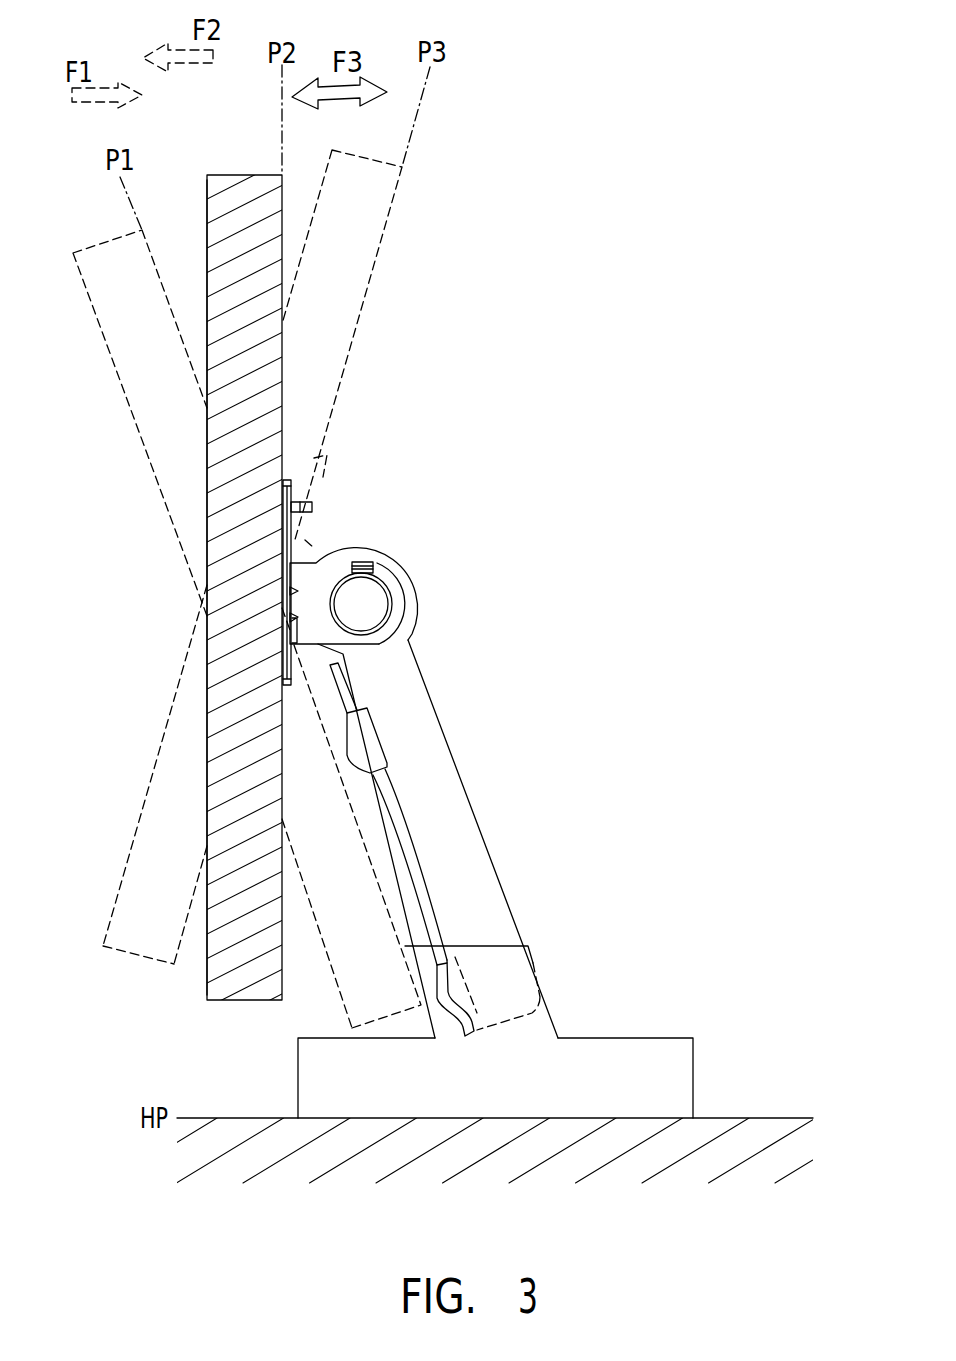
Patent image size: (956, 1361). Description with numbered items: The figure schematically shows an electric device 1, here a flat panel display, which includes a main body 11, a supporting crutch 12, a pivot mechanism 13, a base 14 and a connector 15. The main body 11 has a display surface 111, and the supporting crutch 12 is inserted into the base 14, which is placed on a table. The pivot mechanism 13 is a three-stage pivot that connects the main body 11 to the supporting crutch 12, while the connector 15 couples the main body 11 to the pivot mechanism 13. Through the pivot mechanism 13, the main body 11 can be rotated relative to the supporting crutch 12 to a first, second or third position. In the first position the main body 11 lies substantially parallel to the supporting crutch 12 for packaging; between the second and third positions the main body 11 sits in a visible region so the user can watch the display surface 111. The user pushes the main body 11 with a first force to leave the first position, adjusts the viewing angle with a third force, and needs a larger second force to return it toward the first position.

The electric device 1 is at (793, 78).
The main body 11 is at (218, 175).
The display surface 111 is at (194, 307).
The supporting crutch 12 is at (437, 745).
The pivot mechanism 13 is at (362, 603).
The base 14 is at (667, 1072).
The connector 15 is at (327, 572).